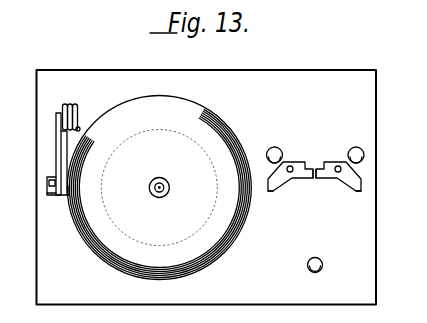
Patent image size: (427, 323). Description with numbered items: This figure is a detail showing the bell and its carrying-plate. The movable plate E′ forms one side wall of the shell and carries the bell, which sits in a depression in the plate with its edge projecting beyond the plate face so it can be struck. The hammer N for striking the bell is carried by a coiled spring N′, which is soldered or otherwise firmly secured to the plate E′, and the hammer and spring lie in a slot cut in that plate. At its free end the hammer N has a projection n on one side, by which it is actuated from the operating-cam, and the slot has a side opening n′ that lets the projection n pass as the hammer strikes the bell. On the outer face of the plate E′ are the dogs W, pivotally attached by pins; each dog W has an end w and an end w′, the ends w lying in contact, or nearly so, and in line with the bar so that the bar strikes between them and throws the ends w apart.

The plate E′ is at (207, 187).
The hammer N is at (56, 157).
The coiled spring N′ is at (80, 112).
The projection n is at (49, 185).
The side opening n′ is at (49, 194).
The dogs W is at (278, 175).
The end w is at (313, 183).
The end w′ is at (270, 192).